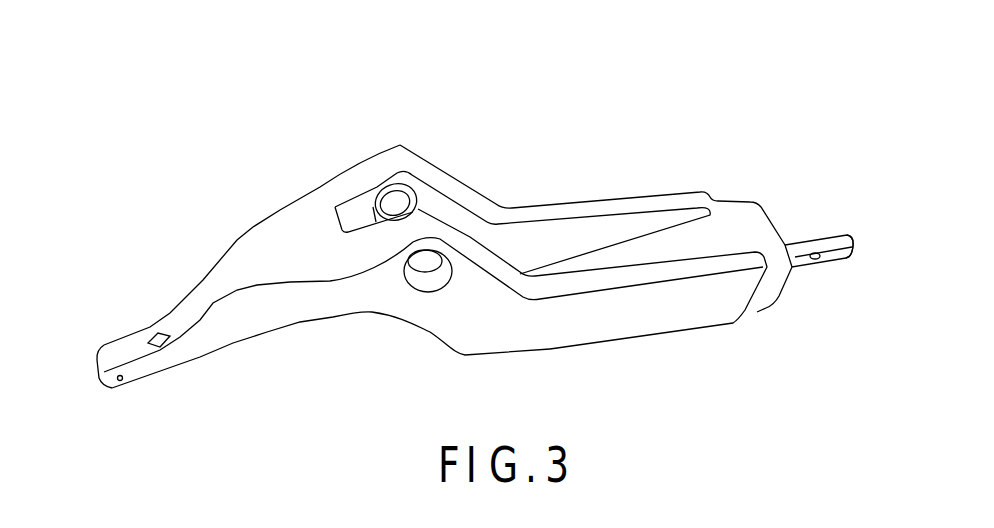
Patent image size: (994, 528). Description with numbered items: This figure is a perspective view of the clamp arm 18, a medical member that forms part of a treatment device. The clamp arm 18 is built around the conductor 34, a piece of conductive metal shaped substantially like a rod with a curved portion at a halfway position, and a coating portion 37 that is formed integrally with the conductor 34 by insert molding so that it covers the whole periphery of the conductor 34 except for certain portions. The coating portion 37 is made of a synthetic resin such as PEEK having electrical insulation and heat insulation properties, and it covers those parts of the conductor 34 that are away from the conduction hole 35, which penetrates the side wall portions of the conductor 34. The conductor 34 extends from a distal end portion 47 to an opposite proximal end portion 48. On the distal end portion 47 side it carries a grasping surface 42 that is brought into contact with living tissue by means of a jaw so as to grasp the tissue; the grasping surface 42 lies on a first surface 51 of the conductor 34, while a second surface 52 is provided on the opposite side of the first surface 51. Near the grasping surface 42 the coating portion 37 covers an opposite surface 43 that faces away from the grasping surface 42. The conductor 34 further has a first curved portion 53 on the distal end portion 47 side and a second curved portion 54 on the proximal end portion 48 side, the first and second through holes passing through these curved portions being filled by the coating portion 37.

The clamp arm 18 is at (495, 113).
The conductor 34 is at (807, 240).
The conduction hole 35 is at (400, 197).
The coating portion 37 is at (313, 187).
The grasping surface 42 is at (125, 385).
The opposite surface 43 is at (120, 340).
The distal end portion 47 is at (95, 358).
The proximal end portion 48 is at (853, 248).
The first surface 51 is at (323, 320).
The second surface 52 is at (275, 243).
The first curved portion 53 is at (260, 253).
The second curved portion 54 is at (370, 313).